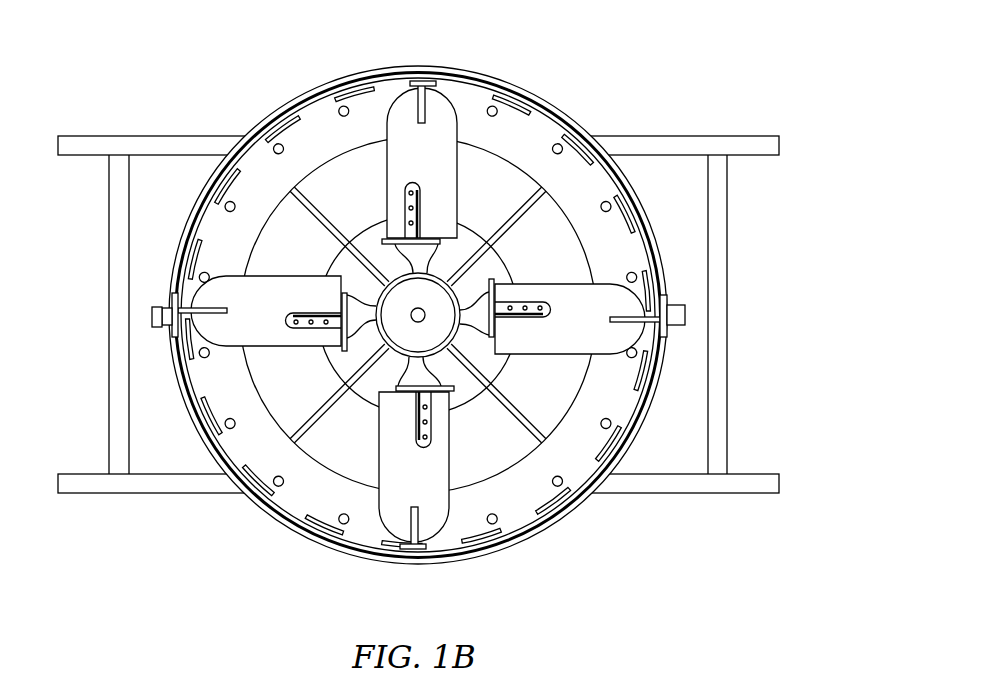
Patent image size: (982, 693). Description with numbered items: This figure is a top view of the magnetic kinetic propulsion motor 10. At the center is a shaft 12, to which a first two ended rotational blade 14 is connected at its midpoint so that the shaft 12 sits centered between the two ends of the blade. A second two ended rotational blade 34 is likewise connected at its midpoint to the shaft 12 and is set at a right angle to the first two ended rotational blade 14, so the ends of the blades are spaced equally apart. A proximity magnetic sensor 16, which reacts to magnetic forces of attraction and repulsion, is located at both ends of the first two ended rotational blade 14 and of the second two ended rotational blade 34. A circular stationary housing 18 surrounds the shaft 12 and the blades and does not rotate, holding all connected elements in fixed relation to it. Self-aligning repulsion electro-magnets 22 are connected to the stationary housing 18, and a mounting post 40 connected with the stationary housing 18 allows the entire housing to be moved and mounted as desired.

The magnetic kinetic propulsion motor 10 is at (449, 313).
The shaft 12 is at (413, 321).
The first two ended rotational blade 14 is at (247, 296).
The proximity magnetic sensor 16 is at (421, 83).
The stationary housing 18 is at (647, 367).
The self-aligning repulsion electro-magnets 22 is at (225, 170).
The second two ended rotational blade 34 is at (398, 157).
The mounting post 40 is at (150, 320).